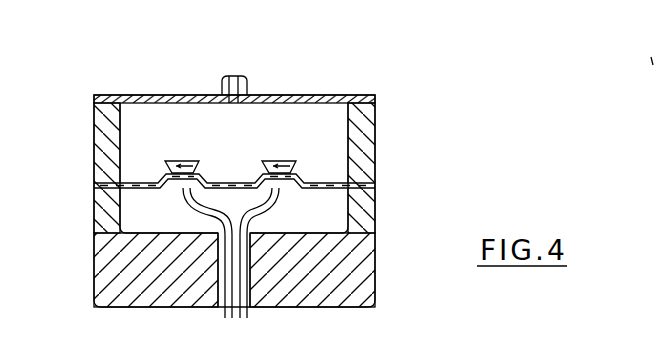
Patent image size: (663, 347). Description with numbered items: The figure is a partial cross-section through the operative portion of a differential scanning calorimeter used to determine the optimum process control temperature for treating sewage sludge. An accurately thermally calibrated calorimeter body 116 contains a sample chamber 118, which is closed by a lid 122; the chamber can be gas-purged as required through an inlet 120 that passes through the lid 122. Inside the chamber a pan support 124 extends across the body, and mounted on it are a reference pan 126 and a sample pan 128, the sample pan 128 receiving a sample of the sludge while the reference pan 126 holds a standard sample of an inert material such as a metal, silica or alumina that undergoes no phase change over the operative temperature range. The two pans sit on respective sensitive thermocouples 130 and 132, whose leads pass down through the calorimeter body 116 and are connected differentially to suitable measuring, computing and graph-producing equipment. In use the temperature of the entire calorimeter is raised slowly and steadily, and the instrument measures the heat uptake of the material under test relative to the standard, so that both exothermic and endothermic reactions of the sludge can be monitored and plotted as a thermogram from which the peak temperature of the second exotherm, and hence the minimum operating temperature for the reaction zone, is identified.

The calorimeter body 116 is at (107, 267).
The sample chamber 118 is at (128, 210).
The inlet 120 is at (222, 78).
The lid 122 is at (162, 94).
The pan support 124 is at (330, 182).
The reference pan 126 is at (160, 165).
The sample pan 128 is at (261, 166).
The thermocouple 130 is at (172, 189).
The thermocouple 132 is at (285, 188).